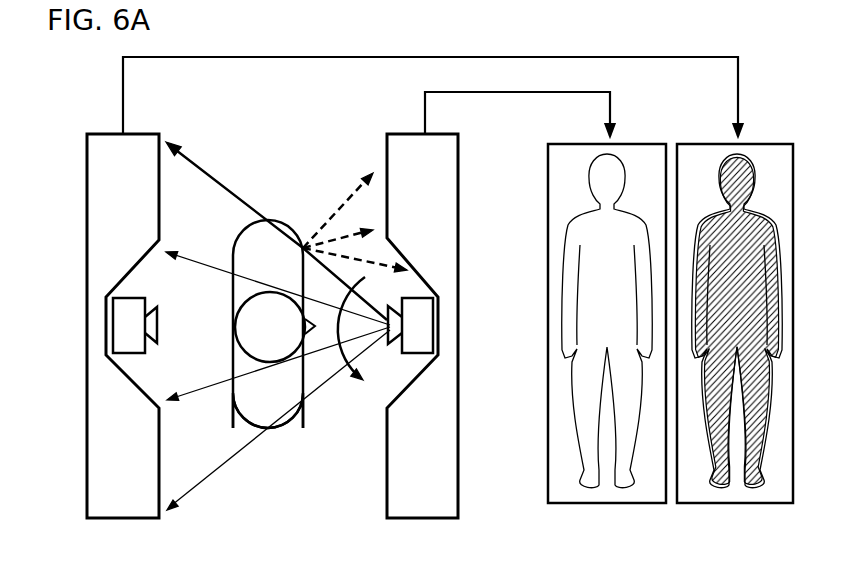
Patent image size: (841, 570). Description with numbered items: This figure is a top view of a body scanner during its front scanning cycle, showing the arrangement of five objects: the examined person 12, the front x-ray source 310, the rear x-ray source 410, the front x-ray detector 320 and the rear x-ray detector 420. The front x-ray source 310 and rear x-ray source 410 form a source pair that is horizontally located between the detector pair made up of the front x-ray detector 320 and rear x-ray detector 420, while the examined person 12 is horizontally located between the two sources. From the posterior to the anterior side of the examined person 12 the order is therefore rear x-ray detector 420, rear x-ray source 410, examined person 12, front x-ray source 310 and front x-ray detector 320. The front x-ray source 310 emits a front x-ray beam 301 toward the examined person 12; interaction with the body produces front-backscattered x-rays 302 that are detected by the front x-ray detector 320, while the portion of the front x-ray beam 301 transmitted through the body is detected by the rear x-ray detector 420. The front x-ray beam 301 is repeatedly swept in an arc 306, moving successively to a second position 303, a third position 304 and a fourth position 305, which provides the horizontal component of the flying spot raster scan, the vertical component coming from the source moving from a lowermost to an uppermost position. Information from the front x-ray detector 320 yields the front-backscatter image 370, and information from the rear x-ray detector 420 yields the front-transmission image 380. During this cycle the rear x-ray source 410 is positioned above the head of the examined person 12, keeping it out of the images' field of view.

The examined person 12 is at (278, 432).
The front x-ray beam 301 is at (237, 192).
The front-backscattered x-rays 302 is at (335, 210).
The second position 303 is at (225, 263).
The third position 304 is at (207, 380).
The fourth position 305 is at (225, 462).
The arc 306 is at (348, 377).
The front x-ray source 310 is at (425, 327).
The front x-ray detector 320 is at (467, 152).
The front-backscatter image 370 is at (576, 508).
The front-transmission image 380 is at (710, 508).
The rear x-ray source 410 is at (125, 329).
The rear x-ray detector 420 is at (78, 147).